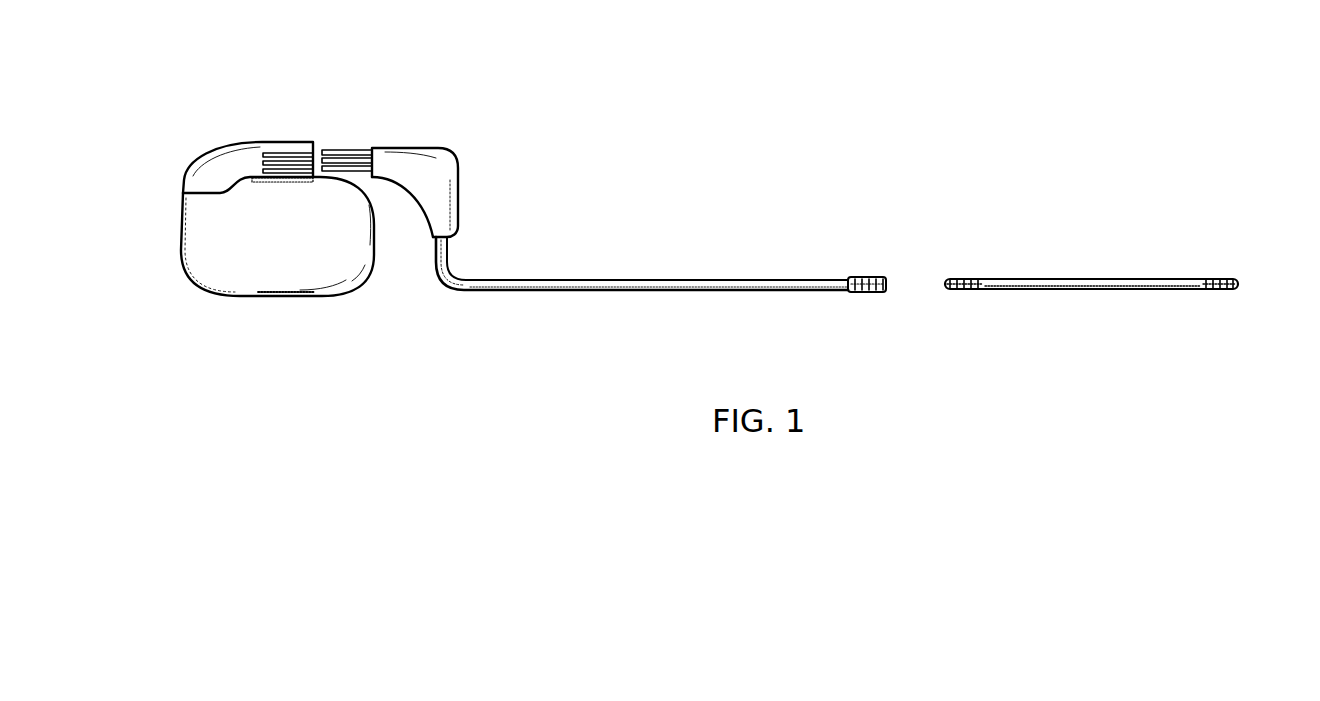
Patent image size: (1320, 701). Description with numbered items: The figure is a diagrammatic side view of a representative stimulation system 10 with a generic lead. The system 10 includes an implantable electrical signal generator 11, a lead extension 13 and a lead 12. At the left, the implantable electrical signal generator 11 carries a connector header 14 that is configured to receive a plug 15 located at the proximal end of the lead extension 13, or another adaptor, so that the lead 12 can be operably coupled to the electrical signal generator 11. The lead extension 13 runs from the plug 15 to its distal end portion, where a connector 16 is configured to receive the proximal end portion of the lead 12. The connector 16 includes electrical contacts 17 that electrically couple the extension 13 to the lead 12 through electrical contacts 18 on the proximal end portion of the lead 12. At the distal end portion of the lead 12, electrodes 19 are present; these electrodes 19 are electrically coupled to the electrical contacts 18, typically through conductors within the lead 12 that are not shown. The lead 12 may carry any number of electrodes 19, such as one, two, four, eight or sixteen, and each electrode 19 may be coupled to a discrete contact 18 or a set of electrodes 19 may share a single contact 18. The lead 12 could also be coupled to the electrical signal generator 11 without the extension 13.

The system 10 is at (741, 90).
The implantable electrical signal generator 11 is at (313, 297).
The lead 12 is at (1133, 278).
The lead extension 13 is at (580, 275).
The connector header 14 is at (242, 145).
The plug 15 is at (424, 146).
The connector 16 is at (855, 278).
The electrical contacts 17 is at (877, 278).
The electrical contacts 18 is at (958, 277).
The electrodes 19 is at (1208, 277).